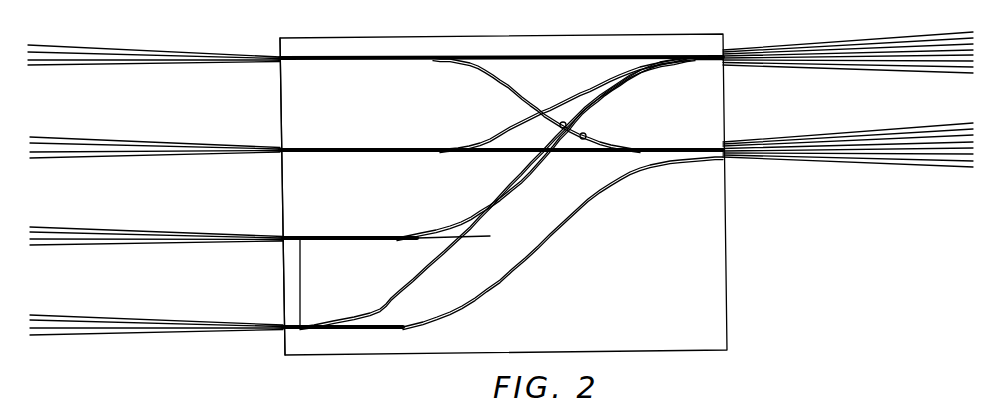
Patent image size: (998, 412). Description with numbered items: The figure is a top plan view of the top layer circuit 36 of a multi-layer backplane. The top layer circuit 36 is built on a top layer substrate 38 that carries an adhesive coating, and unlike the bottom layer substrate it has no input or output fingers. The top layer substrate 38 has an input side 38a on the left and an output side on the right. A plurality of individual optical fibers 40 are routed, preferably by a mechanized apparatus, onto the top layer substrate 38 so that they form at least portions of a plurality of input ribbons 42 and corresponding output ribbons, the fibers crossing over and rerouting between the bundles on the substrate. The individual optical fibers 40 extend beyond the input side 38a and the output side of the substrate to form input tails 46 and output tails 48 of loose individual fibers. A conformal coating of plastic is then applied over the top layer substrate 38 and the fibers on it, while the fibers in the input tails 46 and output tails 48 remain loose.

The top layer circuit 36 is at (740, 258).
The top layer substrate 38 is at (727, 203).
The input side 38a is at (280, 185).
The individual optical fibers 40 is at (490, 236).
The input ribbons 42 is at (313, 241).
The input tails 46 is at (87, 59).
The output tails 48 is at (840, 58).